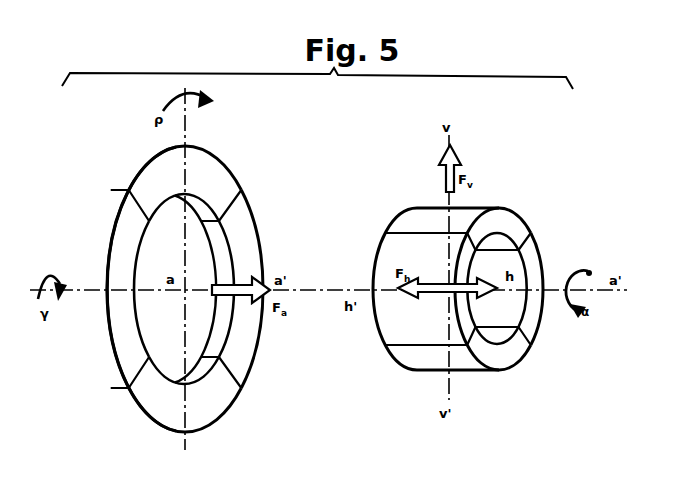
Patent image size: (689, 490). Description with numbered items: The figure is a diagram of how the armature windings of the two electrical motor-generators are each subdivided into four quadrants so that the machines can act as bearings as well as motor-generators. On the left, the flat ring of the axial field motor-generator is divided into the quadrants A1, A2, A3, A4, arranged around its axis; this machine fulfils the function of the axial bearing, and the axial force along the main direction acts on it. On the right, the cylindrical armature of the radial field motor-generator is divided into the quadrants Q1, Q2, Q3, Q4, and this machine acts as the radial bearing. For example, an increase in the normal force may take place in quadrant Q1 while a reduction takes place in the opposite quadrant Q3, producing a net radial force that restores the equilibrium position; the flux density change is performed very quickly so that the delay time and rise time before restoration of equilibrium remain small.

The quadrant of the axial field motor-generator armature winding A1 is at (185, 183).
The quadrant of the axial field motor-generator armature winding A2 is at (241, 289).
The quadrant of the axial field motor-generator armature winding A3 is at (185, 394).
The quadrant of the axial field motor-generator armature winding A4 is at (127, 289).
The quadrant of the radial field motor-generator armature winding Q1 is at (504, 224).
The quadrant of the radial field motor-generator armature winding Q2 is at (535, 275).
The quadrant of the radial field motor-generator armature winding Q3 is at (509, 354).
The quadrant of the radial field motor-generator armature winding Q4 is at (457, 318).